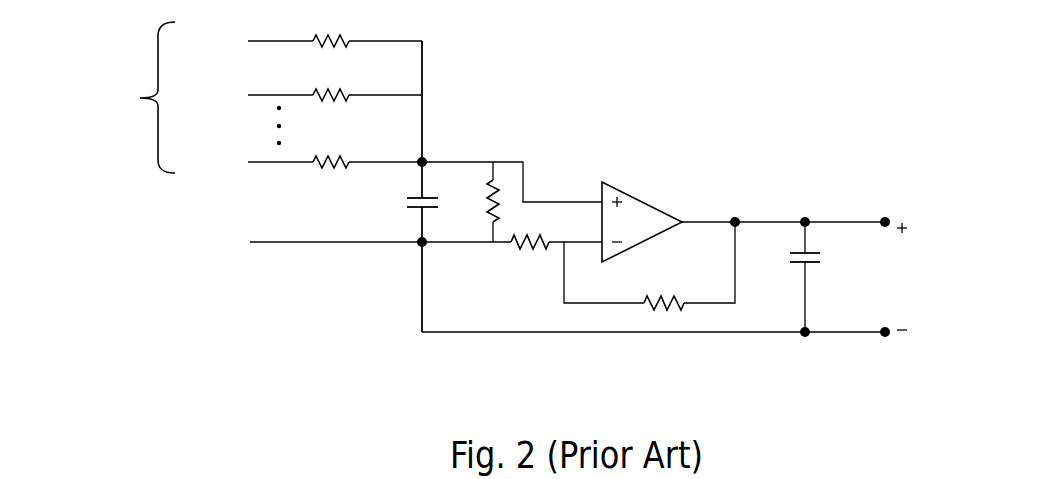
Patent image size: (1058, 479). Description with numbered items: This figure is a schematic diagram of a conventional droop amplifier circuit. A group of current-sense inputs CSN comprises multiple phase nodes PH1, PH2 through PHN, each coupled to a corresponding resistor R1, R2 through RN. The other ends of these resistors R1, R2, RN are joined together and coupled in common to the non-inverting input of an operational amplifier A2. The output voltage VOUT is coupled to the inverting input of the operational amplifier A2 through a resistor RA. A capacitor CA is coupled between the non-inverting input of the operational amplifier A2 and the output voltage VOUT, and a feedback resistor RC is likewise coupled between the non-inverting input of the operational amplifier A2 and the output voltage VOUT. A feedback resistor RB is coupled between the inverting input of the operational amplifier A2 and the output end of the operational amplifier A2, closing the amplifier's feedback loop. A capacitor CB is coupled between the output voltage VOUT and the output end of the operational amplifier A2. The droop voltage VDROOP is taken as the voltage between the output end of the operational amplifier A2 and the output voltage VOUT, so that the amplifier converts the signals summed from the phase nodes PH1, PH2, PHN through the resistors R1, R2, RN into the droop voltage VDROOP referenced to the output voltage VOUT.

The current sense negative inputs CSN is at (111, 97).
The phase node PH1 is at (249, 42).
The phase node PH2 is at (249, 82).
The phase node PHN is at (249, 162).
The resistor R1 is at (367, 28).
The resistor R2 is at (367, 81).
The resistor RN is at (366, 145).
The capacitor CA is at (406, 202).
The feedback resistor RC is at (475, 202).
The resistor RA is at (512, 260).
The feedback resistor RB is at (649, 266).
The operational amplifier A2 is at (644, 198).
The capacitor CB is at (788, 277).
The output voltage VOUT is at (300, 249).
The droop voltage VDROOP is at (906, 276).